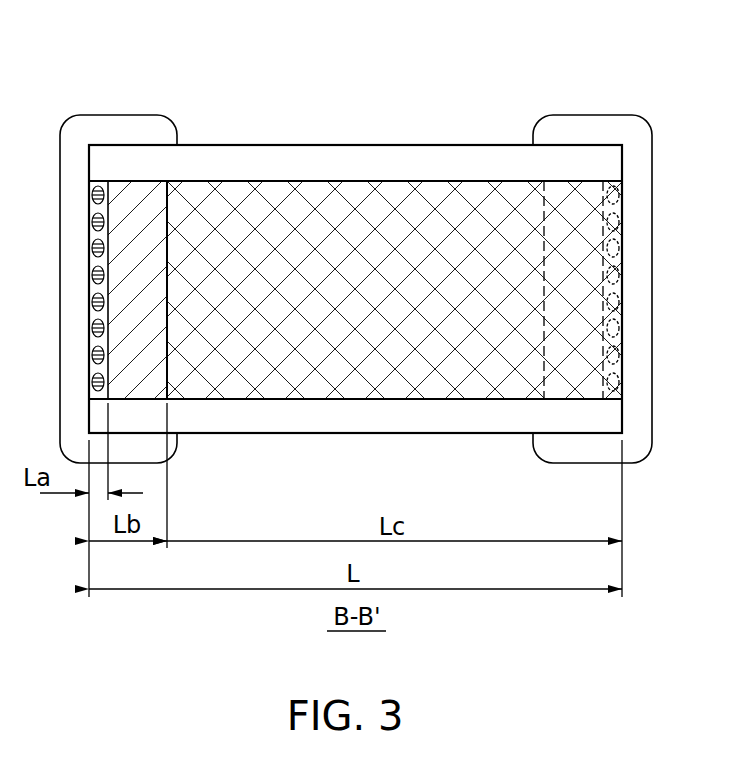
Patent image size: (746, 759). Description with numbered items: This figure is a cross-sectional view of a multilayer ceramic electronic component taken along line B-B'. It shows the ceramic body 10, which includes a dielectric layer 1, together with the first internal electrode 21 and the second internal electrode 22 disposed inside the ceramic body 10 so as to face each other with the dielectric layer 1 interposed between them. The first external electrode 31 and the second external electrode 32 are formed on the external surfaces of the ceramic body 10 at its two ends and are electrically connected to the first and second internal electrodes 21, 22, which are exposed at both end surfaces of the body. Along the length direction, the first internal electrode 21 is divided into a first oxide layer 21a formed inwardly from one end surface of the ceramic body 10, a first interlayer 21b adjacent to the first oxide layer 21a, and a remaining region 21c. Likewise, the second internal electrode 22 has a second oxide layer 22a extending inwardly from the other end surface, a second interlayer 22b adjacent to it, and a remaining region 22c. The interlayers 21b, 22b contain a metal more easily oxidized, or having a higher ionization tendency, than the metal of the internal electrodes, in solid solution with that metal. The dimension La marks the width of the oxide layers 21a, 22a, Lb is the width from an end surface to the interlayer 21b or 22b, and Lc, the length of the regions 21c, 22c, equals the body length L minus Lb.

The dielectric layer 1 is at (600, 416).
The ceramic body 10 is at (355, 145).
The first internal electrode 21 is at (608, 47).
The first oxide layer 21a is at (616, 194).
The first interlayer 21b is at (592, 194).
The region of the first internal electrode 21c is at (472, 192).
The second internal electrode 22 is at (280, 47).
The second oxide layer 22a is at (98, 192).
The second interlayer 22b is at (150, 192).
The region of the second internal electrode 22c is at (275, 192).
The first external electrode 31 is at (88, 127).
The second external electrode 32 is at (622, 140).